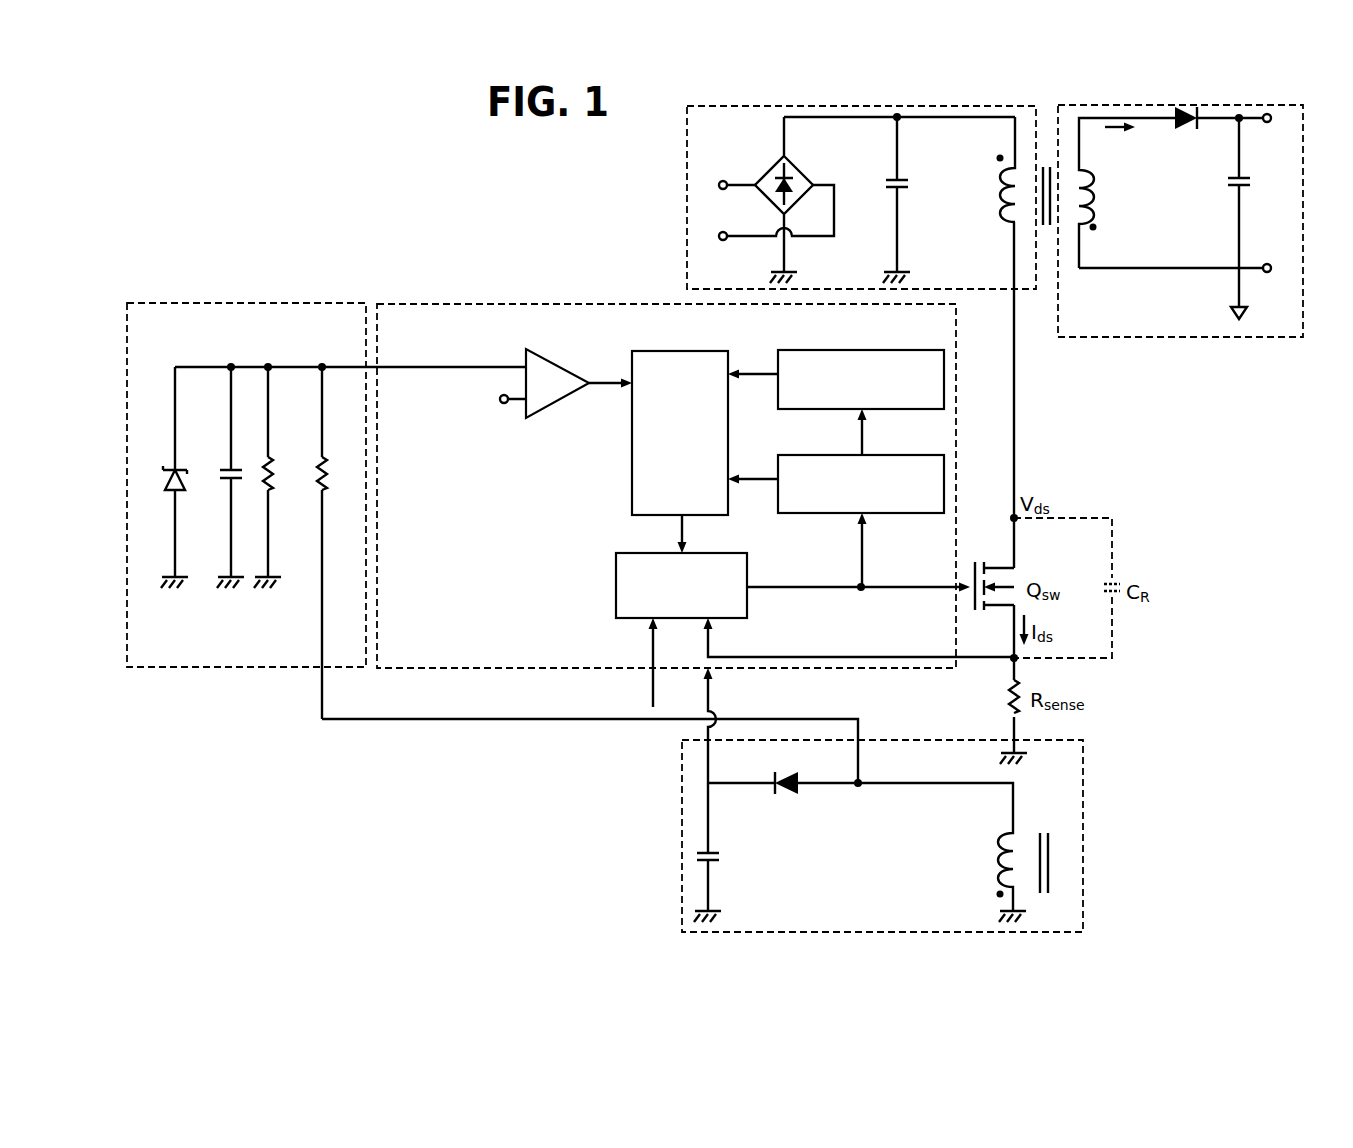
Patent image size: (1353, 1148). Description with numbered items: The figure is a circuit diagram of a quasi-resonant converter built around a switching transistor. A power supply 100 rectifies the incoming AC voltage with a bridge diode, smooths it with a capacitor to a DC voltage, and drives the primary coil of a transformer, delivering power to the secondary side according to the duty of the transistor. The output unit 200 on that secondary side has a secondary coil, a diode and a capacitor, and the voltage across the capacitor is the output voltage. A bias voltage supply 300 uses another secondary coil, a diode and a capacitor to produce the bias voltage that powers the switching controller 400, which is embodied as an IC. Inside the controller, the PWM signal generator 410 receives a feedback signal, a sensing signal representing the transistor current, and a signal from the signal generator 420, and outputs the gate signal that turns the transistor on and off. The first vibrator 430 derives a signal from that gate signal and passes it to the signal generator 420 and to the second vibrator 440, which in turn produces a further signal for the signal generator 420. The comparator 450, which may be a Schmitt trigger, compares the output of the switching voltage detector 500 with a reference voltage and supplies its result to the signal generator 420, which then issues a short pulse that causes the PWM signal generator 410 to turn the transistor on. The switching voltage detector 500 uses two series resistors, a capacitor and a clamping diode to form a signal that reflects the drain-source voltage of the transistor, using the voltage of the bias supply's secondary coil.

The power supply 100 is at (687, 190).
The output unit 200 is at (1160, 337).
The bias voltage supply 300 is at (682, 833).
The switching controller 400 is at (695, 522).
The PWM signal generator 410 is at (616, 590).
The signal generator 420 is at (700, 351).
The first vibrator 430 is at (905, 455).
The second vibrator 440 is at (905, 350).
The comparator 450 is at (557, 349).
The switching voltage detector 500 is at (236, 303).